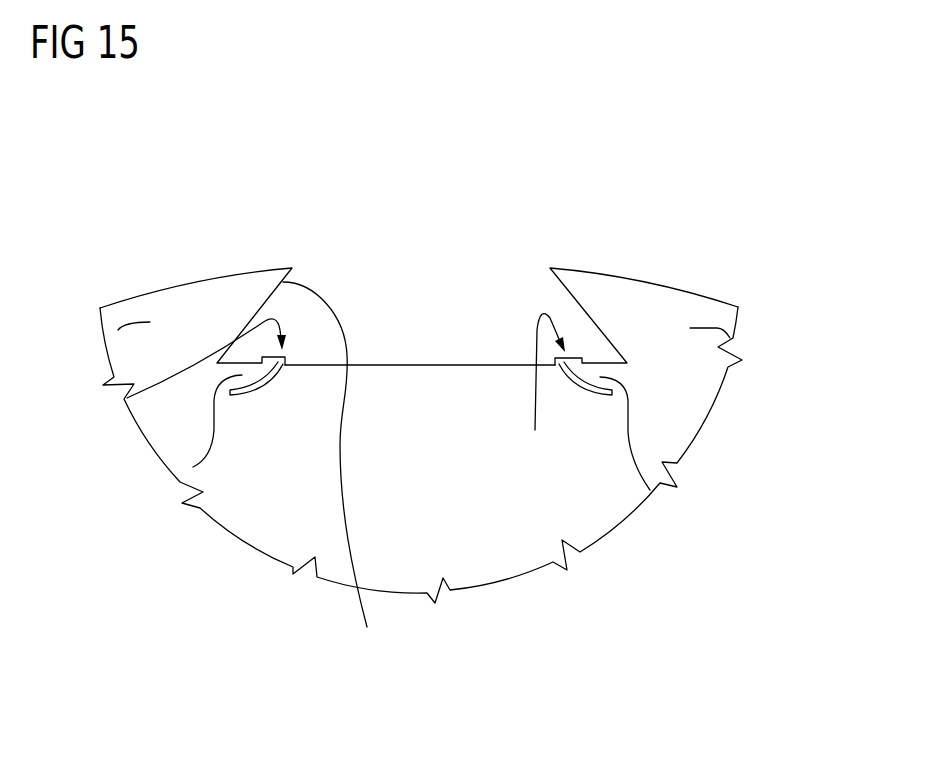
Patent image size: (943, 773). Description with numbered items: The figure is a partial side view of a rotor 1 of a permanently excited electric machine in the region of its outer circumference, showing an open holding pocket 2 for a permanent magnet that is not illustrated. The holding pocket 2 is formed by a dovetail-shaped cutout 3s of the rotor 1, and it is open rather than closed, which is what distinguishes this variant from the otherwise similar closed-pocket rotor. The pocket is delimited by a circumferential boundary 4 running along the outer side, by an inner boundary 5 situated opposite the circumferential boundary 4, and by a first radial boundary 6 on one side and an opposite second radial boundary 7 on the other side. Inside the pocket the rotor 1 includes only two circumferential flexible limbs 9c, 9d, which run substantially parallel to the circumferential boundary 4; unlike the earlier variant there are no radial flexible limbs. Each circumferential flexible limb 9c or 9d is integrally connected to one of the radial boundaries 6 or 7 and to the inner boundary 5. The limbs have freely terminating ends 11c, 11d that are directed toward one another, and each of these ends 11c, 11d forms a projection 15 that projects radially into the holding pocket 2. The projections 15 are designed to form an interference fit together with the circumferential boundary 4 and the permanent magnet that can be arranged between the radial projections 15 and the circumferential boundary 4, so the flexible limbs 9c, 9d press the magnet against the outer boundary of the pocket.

The rotor 1 is at (444, 439).
The holding pocket 2 is at (462, 325).
The dovetail-shaped cutout 3s is at (333, 475).
The circumferential boundary 4 is at (218, 297).
The inner boundary 5 is at (437, 553).
The first radial boundary 6 is at (118, 330).
The second radial boundary 7 is at (730, 338).
The circumferential flexible limb 9c is at (193, 467).
The circumferential flexible limb 9d is at (650, 490).
The freely terminating end 11c is at (127, 398).
The freely terminating end 11d is at (535, 430).
The projection 15 is at (278, 365).